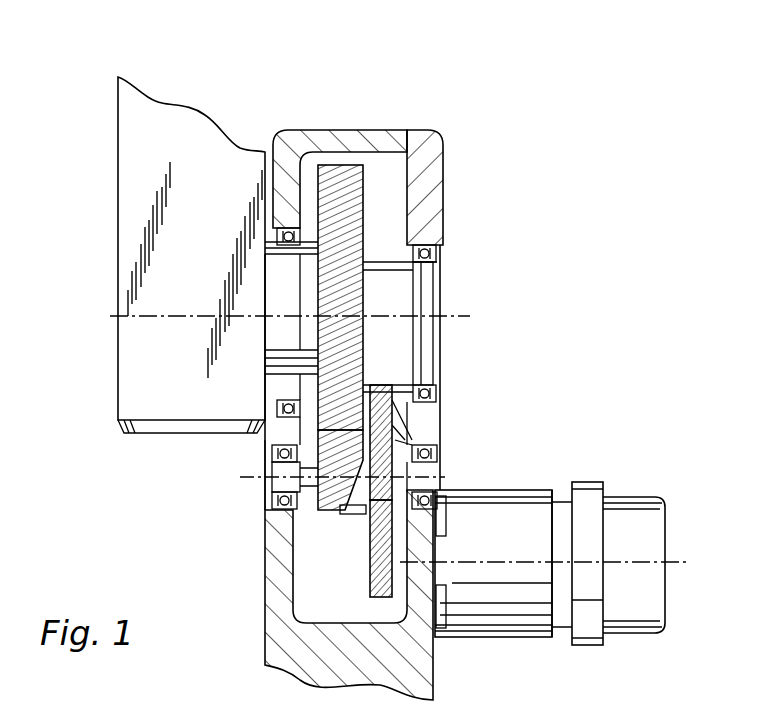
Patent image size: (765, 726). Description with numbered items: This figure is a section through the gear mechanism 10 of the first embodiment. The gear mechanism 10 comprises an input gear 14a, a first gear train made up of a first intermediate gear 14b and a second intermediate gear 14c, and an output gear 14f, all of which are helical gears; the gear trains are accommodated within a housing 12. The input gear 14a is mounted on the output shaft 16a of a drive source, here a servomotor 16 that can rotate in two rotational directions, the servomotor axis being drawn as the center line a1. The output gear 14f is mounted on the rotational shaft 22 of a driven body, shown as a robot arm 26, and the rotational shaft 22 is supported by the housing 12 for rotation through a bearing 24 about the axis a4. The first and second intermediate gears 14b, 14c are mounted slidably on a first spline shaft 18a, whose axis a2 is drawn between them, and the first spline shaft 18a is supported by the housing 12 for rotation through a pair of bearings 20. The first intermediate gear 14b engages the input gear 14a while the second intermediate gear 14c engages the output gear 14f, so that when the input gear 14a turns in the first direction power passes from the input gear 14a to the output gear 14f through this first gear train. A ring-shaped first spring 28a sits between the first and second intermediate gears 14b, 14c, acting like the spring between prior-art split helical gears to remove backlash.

The gear mechanism 10 is at (343, 100).
The housing 12 is at (443, 148).
The input gear 14a is at (368, 588).
The first intermediate gear 14b is at (393, 405).
The second intermediate gear 14c is at (318, 510).
The output gear 14f is at (350, 290).
The servomotor 16 is at (531, 491).
The output shaft 16a is at (425, 545).
The first spline shaft 18a is at (275, 480).
The bearings 20 is at (272, 452).
The rotational shaft 22 is at (436, 296).
The bearing 24 is at (288, 250).
The robot arm 26 is at (118, 115).
The first spring 28a is at (348, 517).
The axis of drive shaft a1 is at (563, 564).
The axis of intermediate shaft a2 is at (329, 478).
The axis of gear wheel a4 is at (262, 316).